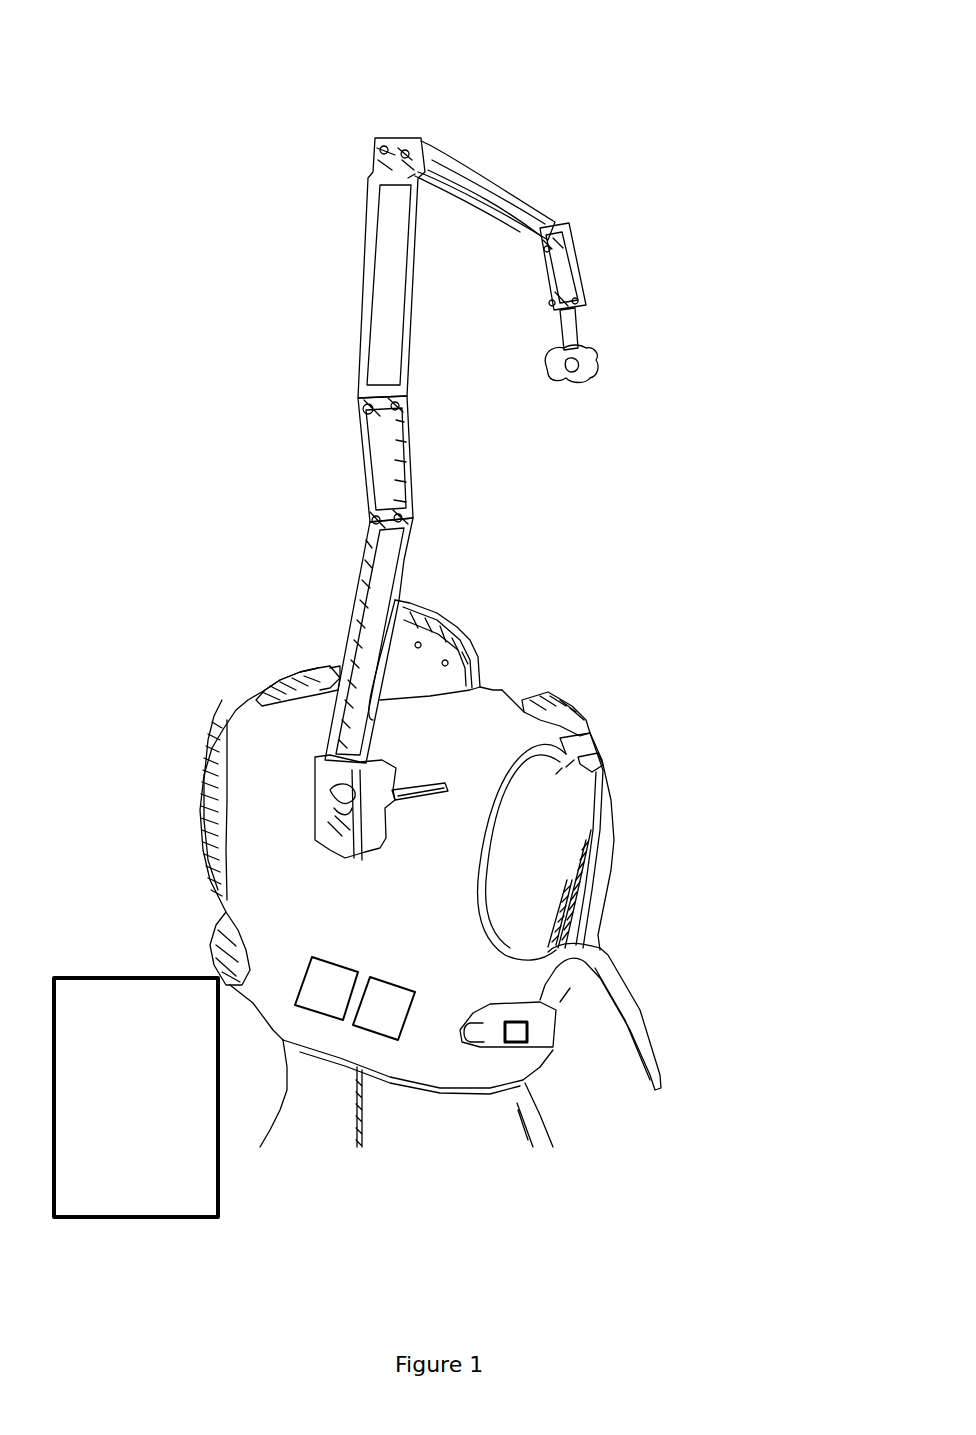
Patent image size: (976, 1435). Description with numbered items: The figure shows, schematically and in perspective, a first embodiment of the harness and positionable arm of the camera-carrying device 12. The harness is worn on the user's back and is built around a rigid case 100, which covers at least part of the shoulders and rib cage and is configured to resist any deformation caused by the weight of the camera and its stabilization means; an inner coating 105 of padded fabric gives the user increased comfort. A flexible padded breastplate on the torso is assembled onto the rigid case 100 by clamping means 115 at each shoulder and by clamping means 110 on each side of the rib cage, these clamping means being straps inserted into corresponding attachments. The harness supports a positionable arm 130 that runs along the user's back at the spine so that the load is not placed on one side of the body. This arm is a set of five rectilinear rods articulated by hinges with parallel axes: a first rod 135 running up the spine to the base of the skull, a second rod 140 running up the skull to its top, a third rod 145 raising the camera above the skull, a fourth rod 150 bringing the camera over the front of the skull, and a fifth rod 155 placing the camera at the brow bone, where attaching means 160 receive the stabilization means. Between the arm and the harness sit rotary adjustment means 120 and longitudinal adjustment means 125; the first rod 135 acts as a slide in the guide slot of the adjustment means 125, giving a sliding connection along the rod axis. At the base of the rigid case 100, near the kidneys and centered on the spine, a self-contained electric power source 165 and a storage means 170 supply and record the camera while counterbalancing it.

The exoskeleton system 12 is at (545, 95).
The rigid case 100 is at (242, 795).
The inner coating 105 is at (562, 774).
The clamping means 110 is at (215, 940).
The clamping means 115 is at (300, 674).
The rotary adjustment means 120 is at (420, 788).
The longitudinal adjustment means 125 is at (338, 806).
The positionable arm 130 is at (304, 393).
The first rod 135 is at (384, 565).
The second rod 140 is at (378, 479).
The third rod 145 is at (385, 301).
The fourth rod 150 is at (514, 226).
The fifth rod 155 is at (568, 280).
The attaching means 160 is at (573, 366).
The self-contained electric power source 165 is at (332, 968).
The storage means 170 is at (398, 998).